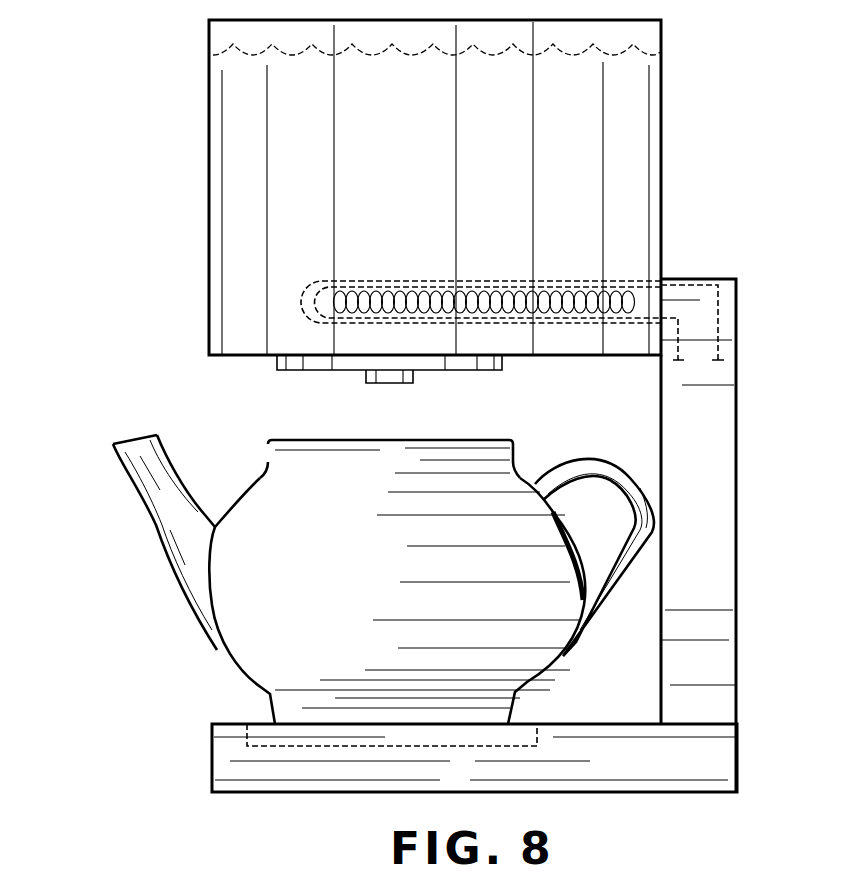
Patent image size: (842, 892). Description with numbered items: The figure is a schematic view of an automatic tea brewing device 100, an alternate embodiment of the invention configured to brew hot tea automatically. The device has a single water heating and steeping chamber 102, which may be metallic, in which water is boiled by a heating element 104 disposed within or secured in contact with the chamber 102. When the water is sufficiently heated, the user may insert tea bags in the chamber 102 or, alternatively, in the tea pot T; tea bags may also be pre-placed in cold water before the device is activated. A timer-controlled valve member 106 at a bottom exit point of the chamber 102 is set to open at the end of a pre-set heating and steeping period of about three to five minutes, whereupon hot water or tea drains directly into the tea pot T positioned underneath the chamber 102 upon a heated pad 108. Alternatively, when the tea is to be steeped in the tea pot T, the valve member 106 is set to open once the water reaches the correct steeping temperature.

The automatic tea brewing device 100 is at (688, 80).
The water heating and steeping chamber 102 is at (243, 168).
The heating element 104 is at (413, 286).
The timer-controlled valve member 106 is at (385, 384).
The heated pad 108 is at (422, 740).
The tea pot T is at (292, 612).